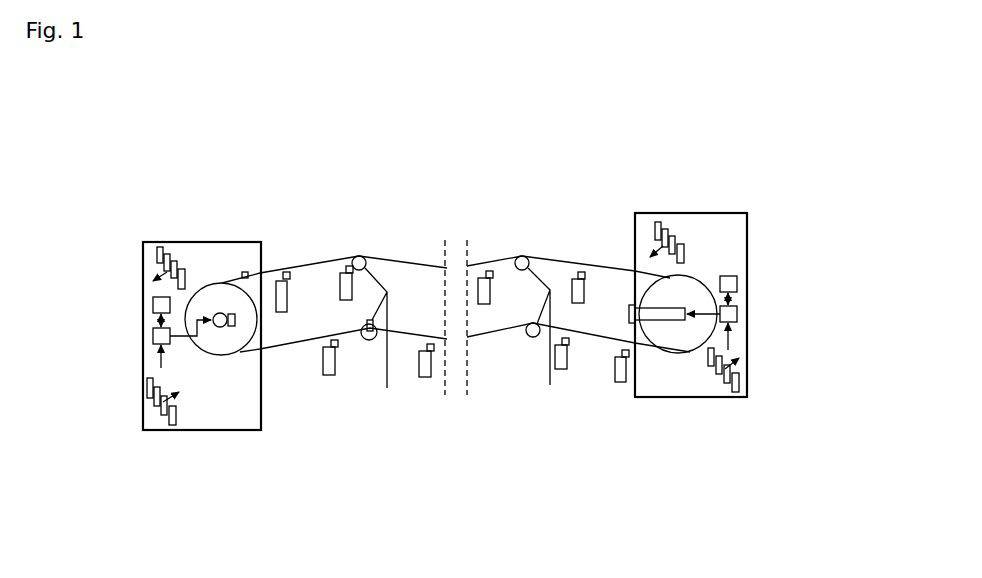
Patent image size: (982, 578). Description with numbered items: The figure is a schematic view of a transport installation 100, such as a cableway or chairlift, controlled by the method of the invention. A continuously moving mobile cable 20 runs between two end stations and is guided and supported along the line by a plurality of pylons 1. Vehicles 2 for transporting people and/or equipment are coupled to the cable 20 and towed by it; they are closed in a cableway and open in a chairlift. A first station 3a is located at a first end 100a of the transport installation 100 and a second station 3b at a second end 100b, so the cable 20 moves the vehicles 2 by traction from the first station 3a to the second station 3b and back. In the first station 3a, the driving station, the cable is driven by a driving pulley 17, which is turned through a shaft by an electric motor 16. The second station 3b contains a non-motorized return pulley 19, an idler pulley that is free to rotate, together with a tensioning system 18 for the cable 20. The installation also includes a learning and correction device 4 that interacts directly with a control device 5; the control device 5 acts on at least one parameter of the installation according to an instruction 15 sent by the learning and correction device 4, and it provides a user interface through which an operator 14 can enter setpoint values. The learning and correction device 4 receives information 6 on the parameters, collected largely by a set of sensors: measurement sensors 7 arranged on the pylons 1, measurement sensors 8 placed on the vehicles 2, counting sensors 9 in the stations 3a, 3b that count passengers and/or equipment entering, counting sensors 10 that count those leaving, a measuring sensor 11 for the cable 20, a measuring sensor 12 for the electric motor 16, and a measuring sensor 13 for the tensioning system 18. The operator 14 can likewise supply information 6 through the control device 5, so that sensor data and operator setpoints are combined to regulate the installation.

The transport installation 100 is at (434, 141).
The first end 100a is at (140, 341).
The second end 100b is at (765, 298).
The pylon 1 is at (548, 372).
The vehicle 2 is at (320, 372).
The first station 3a is at (215, 430).
The second station 3b is at (645, 398).
The learning and correction device 4 is at (153, 300).
The control device 5 is at (153, 336).
The information 6 is at (783, 282).
The measurement sensor 7 is at (378, 328).
The measurement sensor 8 is at (288, 270).
The counting sensor 9 is at (165, 416).
The counting sensor 10 is at (157, 243).
The measuring sensor 11 is at (247, 272).
The measuring sensor 12 is at (233, 328).
The measuring sensor 13 is at (630, 313).
The operator 14 is at (785, 365).
The instruction 15 is at (153, 306).
The electric motor 16 is at (221, 328).
The driving pulley 17 is at (214, 283).
The tensioning system 18 is at (675, 322).
The return pulley 19 is at (699, 292).
The cable 20 is at (557, 257).